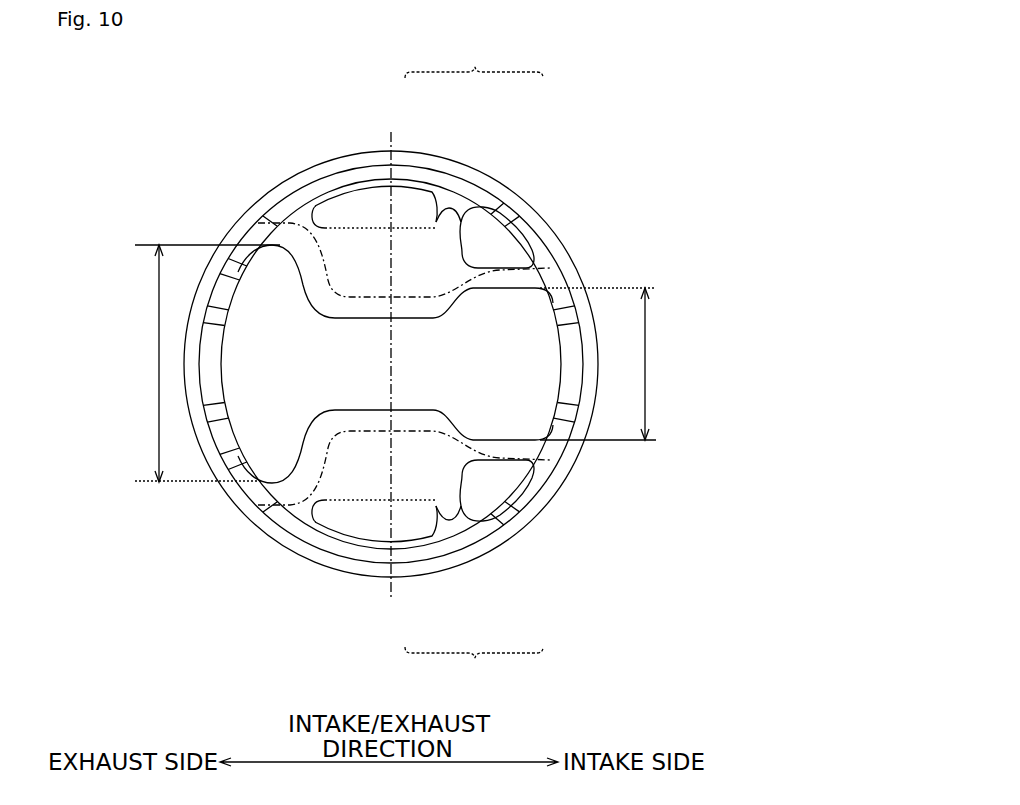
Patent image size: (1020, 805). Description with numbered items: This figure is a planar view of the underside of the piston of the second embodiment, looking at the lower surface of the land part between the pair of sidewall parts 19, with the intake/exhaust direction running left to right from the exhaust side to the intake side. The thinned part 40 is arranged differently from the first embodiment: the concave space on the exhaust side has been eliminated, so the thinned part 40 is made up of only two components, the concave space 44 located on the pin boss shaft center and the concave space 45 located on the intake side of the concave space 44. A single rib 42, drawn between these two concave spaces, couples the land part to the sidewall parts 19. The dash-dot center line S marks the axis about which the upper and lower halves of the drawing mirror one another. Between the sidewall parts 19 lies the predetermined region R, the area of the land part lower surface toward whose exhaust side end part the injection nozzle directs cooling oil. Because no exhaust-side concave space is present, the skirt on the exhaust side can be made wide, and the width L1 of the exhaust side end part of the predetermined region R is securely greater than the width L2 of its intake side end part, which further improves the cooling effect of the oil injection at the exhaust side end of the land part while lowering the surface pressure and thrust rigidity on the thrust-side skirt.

The sidewall parts 19 is at (281, 197).
The thinned part 40 is at (474, 364).
The rib 42 is at (455, 203).
The concave space 44 is at (417, 210).
The concave space 45 is at (487, 238).
The predetermined region R is at (395, 364).
The center axis S is at (389, 135).
The width of the exhaust side end part L1 is at (204, 363).
The width of the intake side end part L2 is at (598, 364).